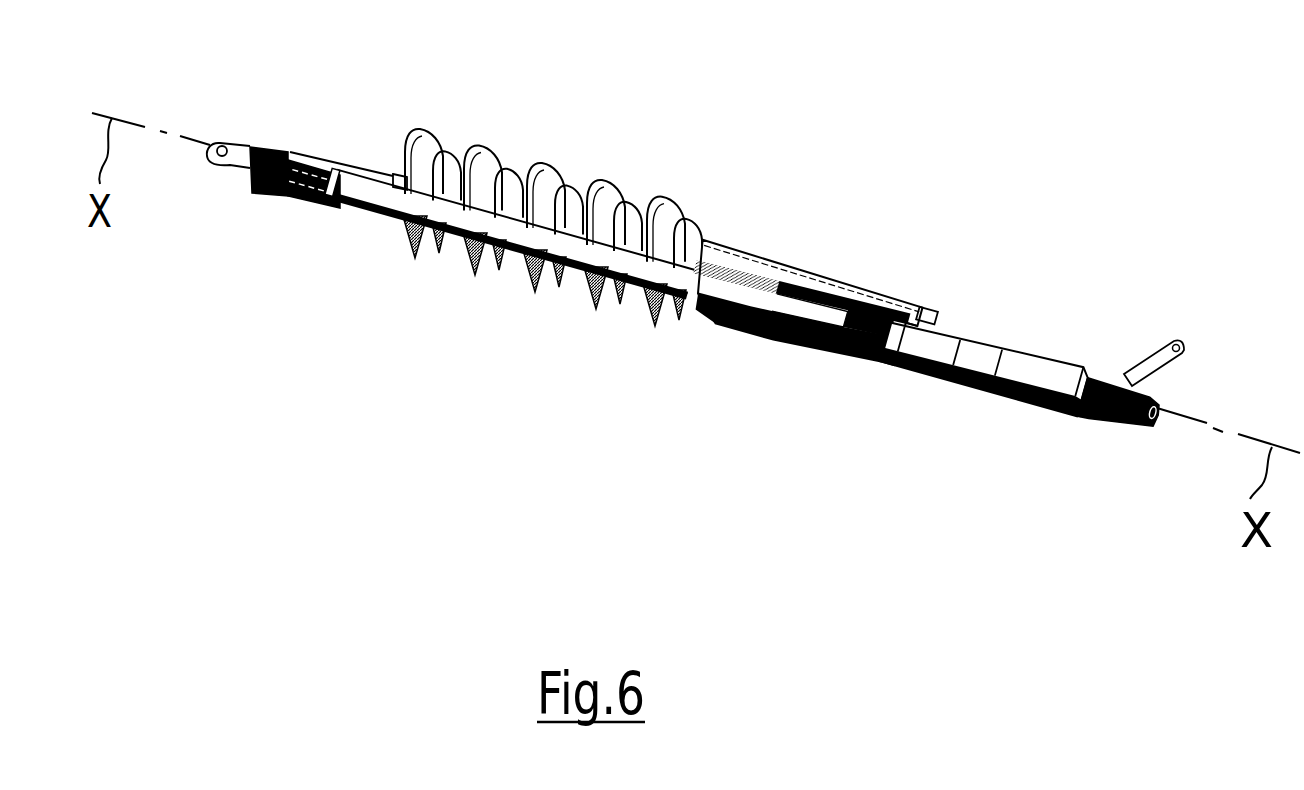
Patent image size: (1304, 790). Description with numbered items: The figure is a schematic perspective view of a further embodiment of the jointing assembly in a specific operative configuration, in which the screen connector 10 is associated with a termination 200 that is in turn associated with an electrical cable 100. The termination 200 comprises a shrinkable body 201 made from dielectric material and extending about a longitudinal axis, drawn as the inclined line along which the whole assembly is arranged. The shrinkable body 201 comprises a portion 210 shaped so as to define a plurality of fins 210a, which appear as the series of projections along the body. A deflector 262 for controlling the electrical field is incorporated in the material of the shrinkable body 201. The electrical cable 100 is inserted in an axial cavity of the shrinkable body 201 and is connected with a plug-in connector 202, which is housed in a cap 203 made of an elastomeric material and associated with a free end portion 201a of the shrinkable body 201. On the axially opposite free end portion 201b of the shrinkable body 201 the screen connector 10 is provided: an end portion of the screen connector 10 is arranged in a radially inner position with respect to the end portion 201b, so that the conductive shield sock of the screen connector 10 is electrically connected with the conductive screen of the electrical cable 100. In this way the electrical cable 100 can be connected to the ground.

The screen connector 10 is at (990, 405).
The electrical cable 100 is at (1107, 420).
The termination 200 is at (600, 384).
The shrinkable body 201 is at (822, 253).
The free end portion of the shrinkable body 201a is at (412, 130).
The free end portion of the shrinkable body 201b is at (927, 264).
The plug-in connector 202 is at (253, 183).
The cap 203 is at (354, 150).
The portion of the shrinkable body 210 is at (585, 150).
The fins 210a is at (628, 191).
The deflector 262 is at (793, 342).